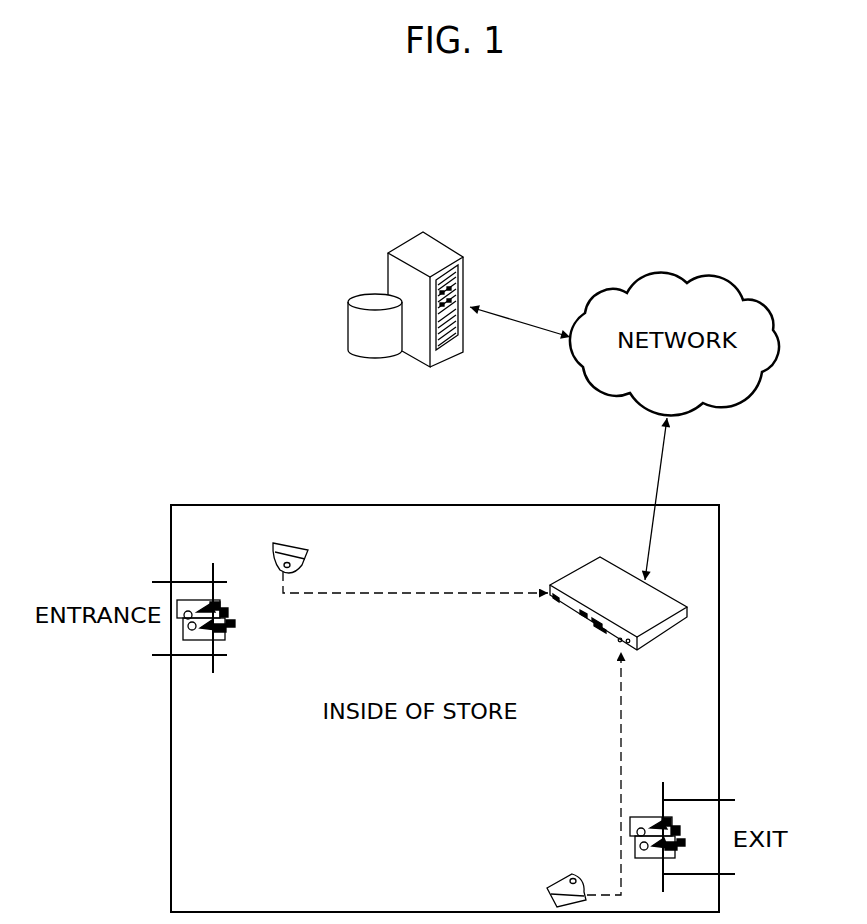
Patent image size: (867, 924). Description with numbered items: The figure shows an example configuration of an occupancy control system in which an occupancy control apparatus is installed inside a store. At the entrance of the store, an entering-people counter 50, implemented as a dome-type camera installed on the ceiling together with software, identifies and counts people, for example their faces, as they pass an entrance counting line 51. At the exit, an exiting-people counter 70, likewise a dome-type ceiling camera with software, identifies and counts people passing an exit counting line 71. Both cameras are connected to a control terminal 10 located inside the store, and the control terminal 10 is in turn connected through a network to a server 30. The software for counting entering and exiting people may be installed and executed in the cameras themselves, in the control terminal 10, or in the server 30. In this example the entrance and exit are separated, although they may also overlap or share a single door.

The control terminal 10 is at (577, 578).
The server 30 is at (402, 244).
The entering-people counter 50 is at (302, 544).
The entrance counting line 51 is at (215, 577).
The exiting-people counter 70 is at (562, 878).
The exit counting line 71 is at (665, 792).